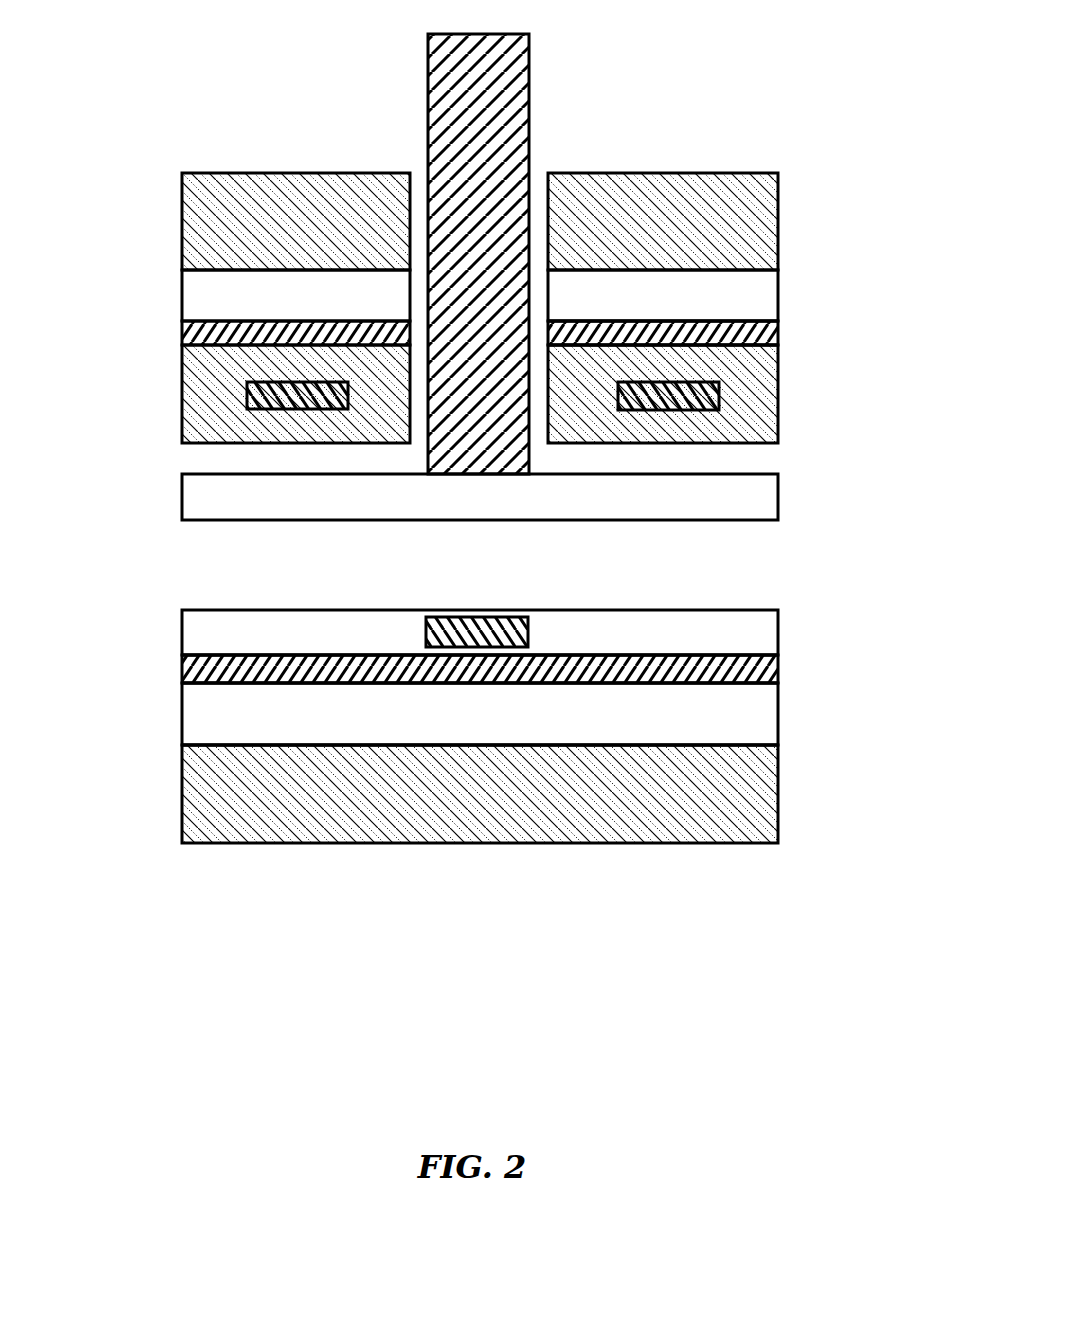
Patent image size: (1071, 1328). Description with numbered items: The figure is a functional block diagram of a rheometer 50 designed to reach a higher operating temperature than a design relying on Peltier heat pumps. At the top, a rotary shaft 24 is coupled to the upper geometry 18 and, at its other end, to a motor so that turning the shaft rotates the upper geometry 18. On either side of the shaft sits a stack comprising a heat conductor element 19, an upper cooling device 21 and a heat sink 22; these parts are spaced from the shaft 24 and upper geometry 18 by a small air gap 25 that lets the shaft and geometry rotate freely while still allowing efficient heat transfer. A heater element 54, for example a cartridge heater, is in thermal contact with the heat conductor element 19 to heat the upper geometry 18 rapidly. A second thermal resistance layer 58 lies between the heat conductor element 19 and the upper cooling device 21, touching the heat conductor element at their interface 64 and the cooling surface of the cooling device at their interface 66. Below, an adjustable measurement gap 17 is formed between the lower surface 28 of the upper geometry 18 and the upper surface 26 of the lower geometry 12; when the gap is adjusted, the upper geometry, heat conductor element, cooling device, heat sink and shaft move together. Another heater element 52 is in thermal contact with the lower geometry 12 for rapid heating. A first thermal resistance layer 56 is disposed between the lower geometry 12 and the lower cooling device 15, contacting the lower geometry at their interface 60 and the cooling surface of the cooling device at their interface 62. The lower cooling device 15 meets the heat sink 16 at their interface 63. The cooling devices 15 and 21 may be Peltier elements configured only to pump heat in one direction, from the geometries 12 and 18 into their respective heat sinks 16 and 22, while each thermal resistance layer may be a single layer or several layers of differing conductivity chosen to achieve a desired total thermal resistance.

The rheometer 50 is at (186, 113).
The rotary shaft 24 is at (532, 122).
The air gap 25 is at (417, 178).
The heat sink 22 is at (780, 232).
The cooling device 21 is at (780, 298).
The second thermal resistance layer 58 is at (180, 328).
The interface 66 is at (781, 321).
The interface 64 is at (781, 345).
The heat conductor element 19 is at (780, 372).
The heater element 54 is at (247, 395).
The upper geometry 18 is at (780, 490).
The measurement gap 17 is at (203, 570).
The lower surface 28 is at (657, 521).
The lower geometry 12 is at (459, 689).
The upper surface 26 is at (289, 606).
The heater element 52 is at (529, 628).
The first thermal resistance layer 56 is at (780, 672).
The interface 60 is at (181, 657).
The interface 62 is at (181, 683).
The cooling device 15 is at (780, 720).
The interface 63 is at (181, 743).
The heat sink 16 is at (780, 795).